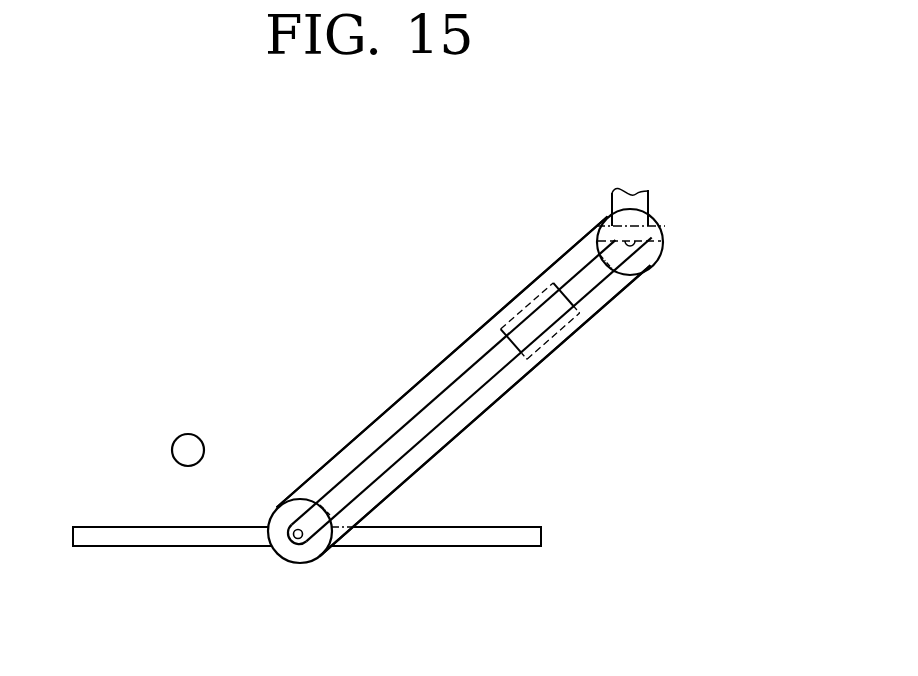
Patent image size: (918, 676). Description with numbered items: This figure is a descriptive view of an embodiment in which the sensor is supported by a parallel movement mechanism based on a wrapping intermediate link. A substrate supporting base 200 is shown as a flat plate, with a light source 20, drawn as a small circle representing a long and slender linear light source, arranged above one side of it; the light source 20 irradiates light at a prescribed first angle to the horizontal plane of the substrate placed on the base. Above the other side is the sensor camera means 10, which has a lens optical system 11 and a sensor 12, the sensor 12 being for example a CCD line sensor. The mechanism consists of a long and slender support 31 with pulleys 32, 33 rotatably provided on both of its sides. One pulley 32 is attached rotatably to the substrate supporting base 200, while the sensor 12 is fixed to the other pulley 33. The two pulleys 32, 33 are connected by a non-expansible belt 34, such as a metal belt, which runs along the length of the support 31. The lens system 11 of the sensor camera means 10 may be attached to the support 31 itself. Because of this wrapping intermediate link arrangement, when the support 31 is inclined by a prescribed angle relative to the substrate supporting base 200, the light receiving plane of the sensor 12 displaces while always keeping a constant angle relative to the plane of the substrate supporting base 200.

The sensor camera means 10 is at (542, 180).
The lens optical system 11 is at (513, 305).
The sensor 12 is at (662, 232).
The light source 20 is at (185, 443).
The long and slender support 31 is at (390, 430).
The pulley 32 is at (297, 563).
The pulley 33 is at (648, 260).
The belt 34 is at (432, 370).
The substrate supporting base 200 is at (178, 538).